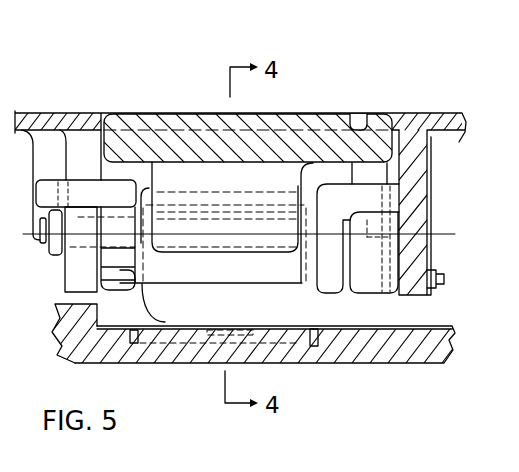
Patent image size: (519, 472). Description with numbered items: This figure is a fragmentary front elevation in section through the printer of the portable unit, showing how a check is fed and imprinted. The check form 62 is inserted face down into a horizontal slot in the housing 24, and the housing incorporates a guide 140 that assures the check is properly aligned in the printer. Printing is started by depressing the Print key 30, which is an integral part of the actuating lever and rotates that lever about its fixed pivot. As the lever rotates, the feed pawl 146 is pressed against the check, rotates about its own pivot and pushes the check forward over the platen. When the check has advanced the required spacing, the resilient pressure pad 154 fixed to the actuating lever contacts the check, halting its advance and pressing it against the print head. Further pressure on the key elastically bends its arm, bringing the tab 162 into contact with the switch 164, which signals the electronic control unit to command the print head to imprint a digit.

The housing 24 is at (398, 118).
The Print key 30 is at (143, 113).
The tab 162 is at (366, 129).
The feed pawl 146 is at (223, 316).
The resilient pressure pad 154 is at (287, 252).
The switch 164 is at (367, 296).
The check form 62 is at (452, 327).
The guide 140 is at (100, 306).